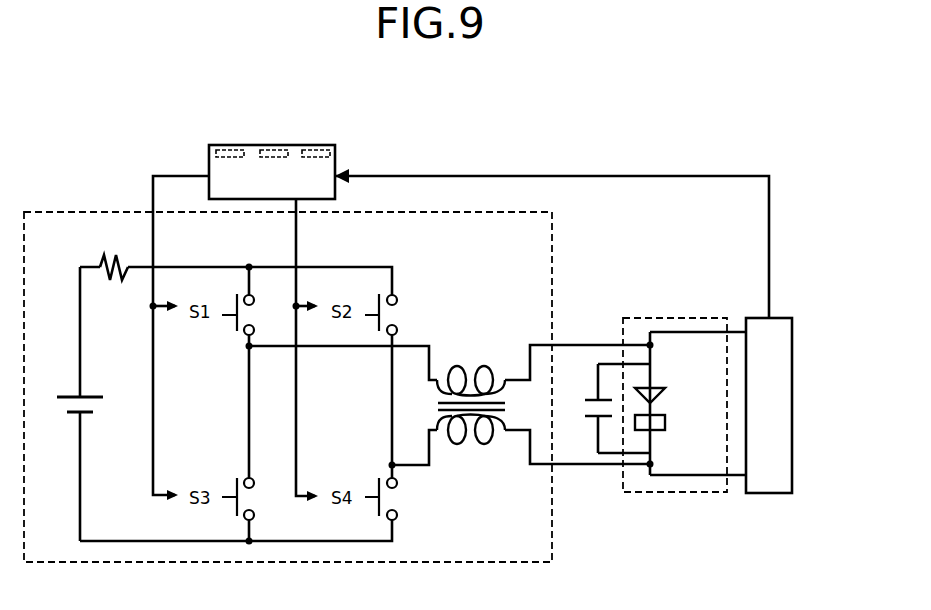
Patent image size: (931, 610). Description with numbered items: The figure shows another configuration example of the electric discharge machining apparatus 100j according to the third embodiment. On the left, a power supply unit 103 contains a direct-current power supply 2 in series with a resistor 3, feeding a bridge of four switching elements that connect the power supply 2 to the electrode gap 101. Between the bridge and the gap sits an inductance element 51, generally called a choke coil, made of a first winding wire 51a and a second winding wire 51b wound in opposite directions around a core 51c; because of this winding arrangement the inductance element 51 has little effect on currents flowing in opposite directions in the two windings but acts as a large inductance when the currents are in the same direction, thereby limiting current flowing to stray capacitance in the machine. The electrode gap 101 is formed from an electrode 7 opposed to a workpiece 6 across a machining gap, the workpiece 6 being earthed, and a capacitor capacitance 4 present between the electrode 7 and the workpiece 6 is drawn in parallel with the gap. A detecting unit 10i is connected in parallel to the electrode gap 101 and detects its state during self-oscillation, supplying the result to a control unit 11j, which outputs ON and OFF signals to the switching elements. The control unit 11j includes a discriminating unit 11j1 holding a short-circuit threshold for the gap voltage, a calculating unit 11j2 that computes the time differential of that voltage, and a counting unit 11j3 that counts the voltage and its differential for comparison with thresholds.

The power supply 2 is at (75, 413).
The resistor 3 is at (108, 262).
The capacitor capacitance 4 is at (592, 398).
The workpiece 6 is at (666, 430).
The electrode 7 is at (660, 392).
The detecting unit 10i is at (793, 333).
The control unit 11j is at (209, 160).
The discriminating unit 11j1 is at (232, 148).
The calculating unit 11j2 is at (276, 148).
The counting unit 11j3 is at (330, 148).
The inductance element 51 is at (414, 378).
The first winding wire 51a is at (473, 367).
The second winding wire 51b is at (474, 455).
The core 51c is at (432, 407).
The electric discharge machining apparatus 100j is at (680, 150).
The electrode gap 101 is at (665, 318).
The power supply unit 103 is at (160, 563).